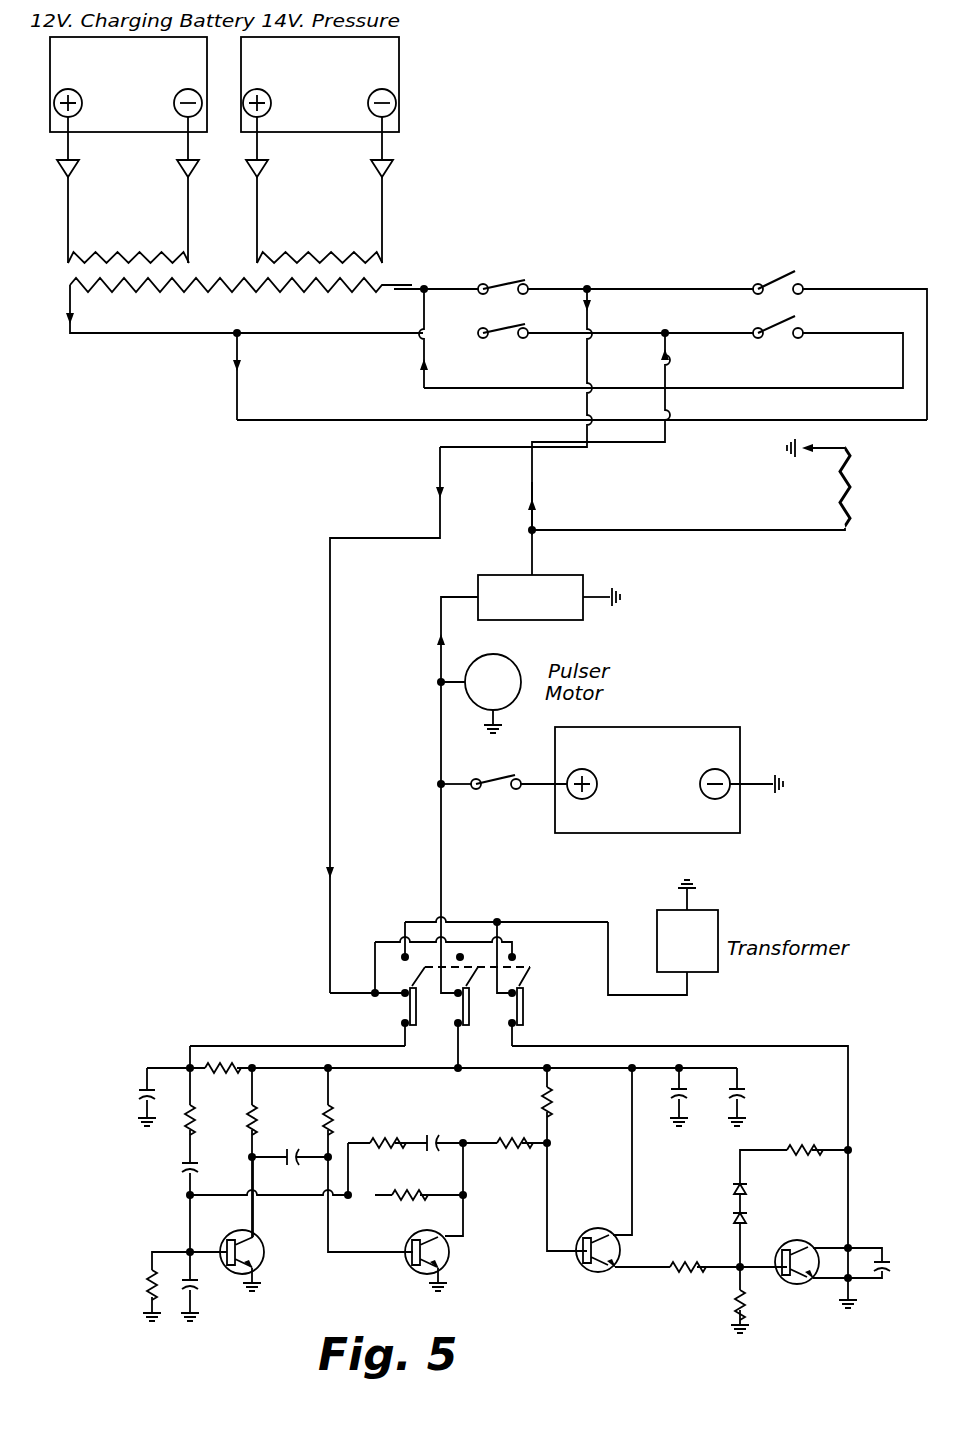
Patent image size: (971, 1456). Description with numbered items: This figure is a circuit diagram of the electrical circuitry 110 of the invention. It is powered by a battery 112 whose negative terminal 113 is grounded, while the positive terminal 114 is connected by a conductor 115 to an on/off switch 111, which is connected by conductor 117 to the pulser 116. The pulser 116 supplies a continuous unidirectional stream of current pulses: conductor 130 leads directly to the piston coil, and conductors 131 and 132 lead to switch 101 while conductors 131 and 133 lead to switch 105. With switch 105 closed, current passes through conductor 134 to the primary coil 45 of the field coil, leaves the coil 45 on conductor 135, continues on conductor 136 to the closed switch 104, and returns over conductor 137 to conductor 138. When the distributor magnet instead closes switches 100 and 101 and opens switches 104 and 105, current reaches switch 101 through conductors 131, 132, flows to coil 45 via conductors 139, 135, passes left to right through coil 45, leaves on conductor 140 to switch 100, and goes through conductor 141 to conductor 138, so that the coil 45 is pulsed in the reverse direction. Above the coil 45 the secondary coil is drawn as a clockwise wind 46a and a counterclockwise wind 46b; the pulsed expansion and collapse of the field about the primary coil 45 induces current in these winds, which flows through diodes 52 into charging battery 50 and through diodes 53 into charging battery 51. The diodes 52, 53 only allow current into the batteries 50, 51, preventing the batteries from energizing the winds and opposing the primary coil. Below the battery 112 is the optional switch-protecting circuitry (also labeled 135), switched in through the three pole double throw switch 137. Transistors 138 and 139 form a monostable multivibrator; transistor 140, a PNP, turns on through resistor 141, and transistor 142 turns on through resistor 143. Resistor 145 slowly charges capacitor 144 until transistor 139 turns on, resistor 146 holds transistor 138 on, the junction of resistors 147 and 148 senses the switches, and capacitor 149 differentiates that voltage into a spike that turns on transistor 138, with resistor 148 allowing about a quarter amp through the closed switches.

The charging battery 50 is at (128, 84).
The charging battery 51 is at (320, 84).
The diodes 52 is at (75, 165).
The diodes 53 is at (265, 165).
The clockwise wind 46a is at (172, 252).
The counterclockwise wind 46b is at (372, 250).
The primary coil 45 is at (238, 290).
The conductor 135 is at (133, 335).
The conductor 139 is at (368, 335).
The conductor 136 is at (378, 422).
The conductor 140 is at (450, 288).
The switch 100 is at (512, 276).
The conductor 141 is at (567, 288).
The conductor 137 is at (653, 290).
The switch 104 is at (785, 270).
The conductor 132 is at (622, 335).
The switch 105 is at (772, 323).
The switch 101 is at (508, 334).
The conductor 133 is at (703, 336).
The conductor 134 is at (515, 390).
The conductor 131 is at (528, 520).
The conductor 130 is at (643, 530).
The conductor 138 is at (330, 605).
The pulser 116 is at (545, 620).
The conductor 117 is at (441, 822).
The on/off switch 111 is at (497, 796).
The conductor 115 is at (538, 788).
The positive terminal 114 is at (582, 800).
The negative terminal 113 is at (715, 800).
The battery 112 is at (647, 780).
The electrical circuitry 110 is at (285, 697).
The resistor 148 is at (228, 1046).
The resistor 147 is at (188, 1120).
The capacitor 149 is at (190, 1170).
The resistor 146 is at (150, 1287).
The capacitor 144 is at (291, 1150).
The resistor 145 is at (330, 1120).
The resistor 143 is at (683, 1277).
The transistor 142 is at (798, 1287).